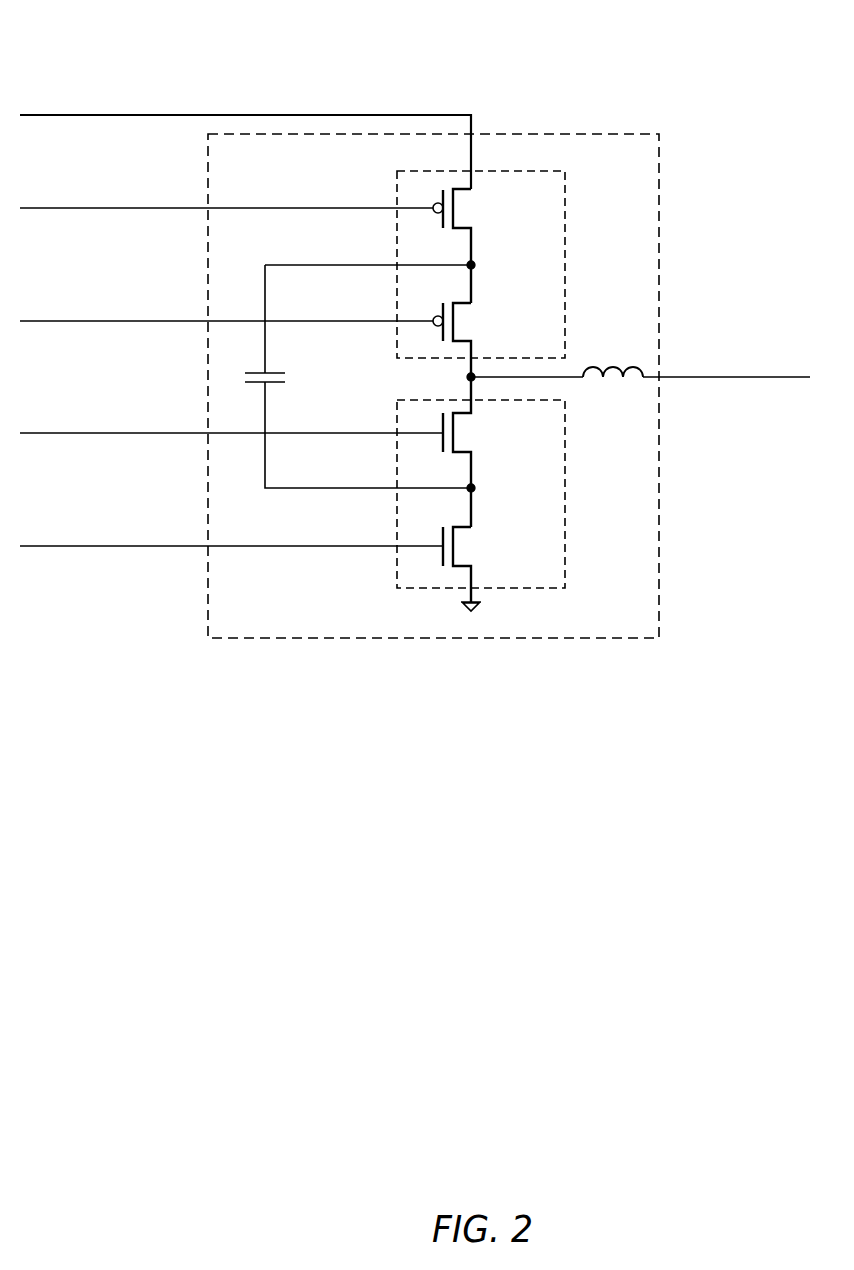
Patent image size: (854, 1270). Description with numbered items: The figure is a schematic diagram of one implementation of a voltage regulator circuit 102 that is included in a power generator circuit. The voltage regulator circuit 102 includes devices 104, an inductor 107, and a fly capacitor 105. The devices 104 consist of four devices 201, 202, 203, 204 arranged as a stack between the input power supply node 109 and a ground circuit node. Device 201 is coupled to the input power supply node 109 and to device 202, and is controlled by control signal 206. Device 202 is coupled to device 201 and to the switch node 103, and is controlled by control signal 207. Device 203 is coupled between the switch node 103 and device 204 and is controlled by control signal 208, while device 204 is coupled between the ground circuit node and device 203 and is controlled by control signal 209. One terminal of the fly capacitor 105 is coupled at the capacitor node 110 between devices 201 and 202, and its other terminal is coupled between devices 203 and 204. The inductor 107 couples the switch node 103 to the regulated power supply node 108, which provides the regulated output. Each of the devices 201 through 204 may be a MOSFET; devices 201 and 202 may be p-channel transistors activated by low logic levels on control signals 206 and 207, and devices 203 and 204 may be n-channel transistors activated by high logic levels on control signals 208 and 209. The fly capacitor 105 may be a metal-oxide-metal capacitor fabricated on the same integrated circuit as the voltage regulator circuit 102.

The voltage regulator circuit 102 is at (622, 133).
The switch node 103 is at (547, 381).
The devices 104 is at (397, 364).
The fly capacitor 105 is at (283, 370).
The inductor 107 is at (630, 366).
The regulated power supply node 108 is at (727, 349).
The input power supply node 109 is at (245, 112).
The capacitor node 110 is at (321, 261).
The device 201 is at (467, 207).
The device 202 is at (467, 322).
The device 203 is at (467, 433).
The device 204 is at (467, 547).
The control signal 206 is at (226, 207).
The control signal 207 is at (226, 320).
The control signal 208 is at (231, 436).
The control signal 209 is at (231, 544).